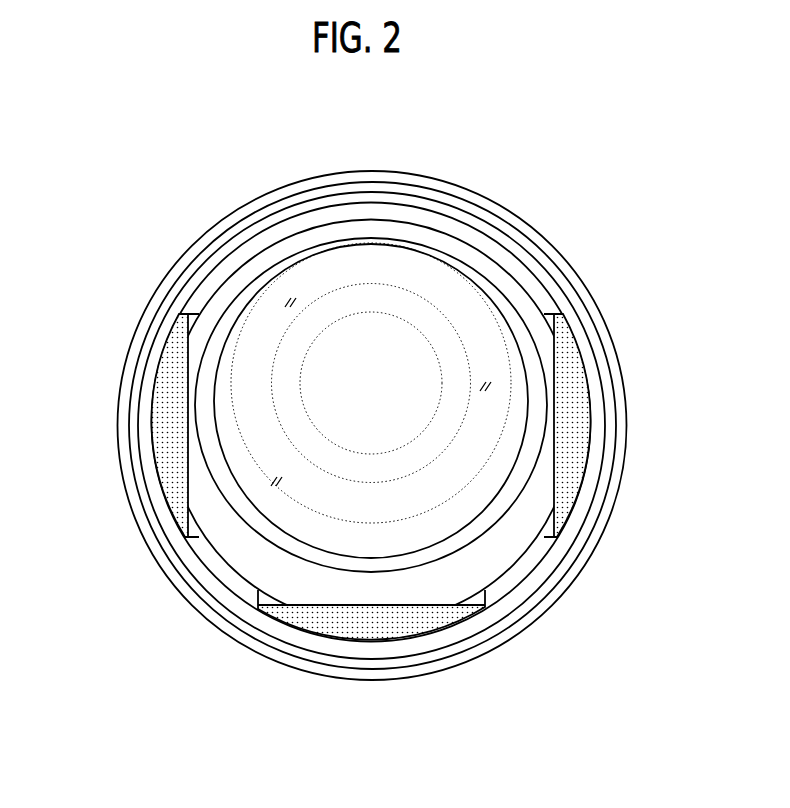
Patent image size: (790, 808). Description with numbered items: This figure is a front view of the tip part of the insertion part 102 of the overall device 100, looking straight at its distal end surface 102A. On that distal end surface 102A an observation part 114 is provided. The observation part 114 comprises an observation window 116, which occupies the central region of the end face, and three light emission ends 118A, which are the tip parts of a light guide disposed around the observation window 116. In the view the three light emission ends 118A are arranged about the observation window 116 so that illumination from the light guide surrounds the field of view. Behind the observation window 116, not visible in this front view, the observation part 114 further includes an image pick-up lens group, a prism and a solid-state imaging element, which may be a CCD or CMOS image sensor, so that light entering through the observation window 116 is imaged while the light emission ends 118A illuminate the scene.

The lens module 100 is at (370, 434).
The insertion part 102 is at (194, 243).
The distal end surface 102A is at (228, 529).
The observation part 114 is at (283, 503).
The observation window 116 is at (388, 436).
The light emission ends 118A is at (165, 427).